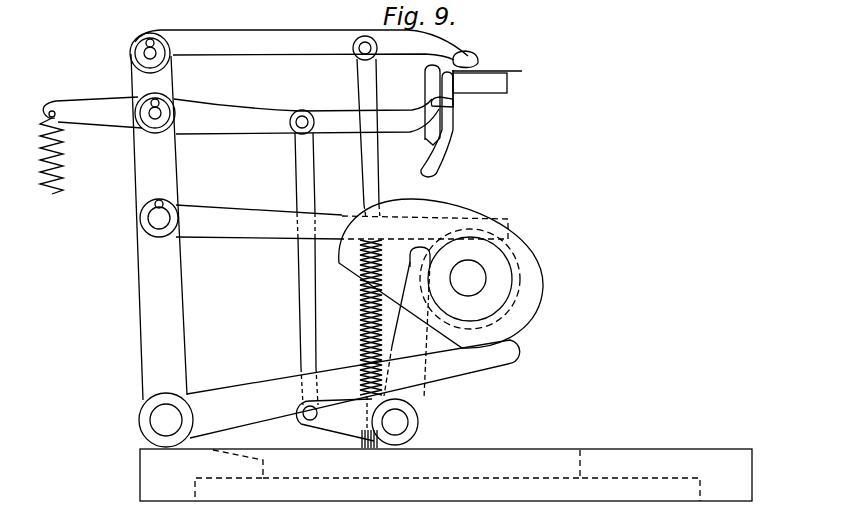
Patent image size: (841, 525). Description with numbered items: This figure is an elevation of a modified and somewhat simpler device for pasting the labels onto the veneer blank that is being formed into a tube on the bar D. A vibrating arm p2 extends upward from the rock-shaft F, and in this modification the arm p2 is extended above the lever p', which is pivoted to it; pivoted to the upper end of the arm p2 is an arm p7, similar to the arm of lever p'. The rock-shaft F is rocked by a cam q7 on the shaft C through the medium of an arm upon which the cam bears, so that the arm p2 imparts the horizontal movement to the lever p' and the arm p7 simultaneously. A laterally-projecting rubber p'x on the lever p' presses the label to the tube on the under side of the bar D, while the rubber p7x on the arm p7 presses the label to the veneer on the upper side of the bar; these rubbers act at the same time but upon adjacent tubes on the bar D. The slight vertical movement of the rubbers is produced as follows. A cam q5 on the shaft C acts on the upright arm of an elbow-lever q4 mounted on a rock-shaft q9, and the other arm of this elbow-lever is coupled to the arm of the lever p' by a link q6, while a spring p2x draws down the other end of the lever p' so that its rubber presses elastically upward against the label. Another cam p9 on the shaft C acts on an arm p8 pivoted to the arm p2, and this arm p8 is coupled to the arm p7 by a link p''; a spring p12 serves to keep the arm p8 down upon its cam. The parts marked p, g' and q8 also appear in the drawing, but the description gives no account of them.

The vibrating arm p2 is at (158, 216).
The rock-shaft F is at (166, 420).
The arm p7 is at (301, 45).
The laterally-projecting rubber p7x is at (481, 57).
The lever p' is at (306, 116).
The laterally-projecting rubber p'x is at (474, 111).
The vertical bar p is at (421, 105).
The curved arm g' is at (448, 124).
The bar D is at (508, 85).
The link p'' is at (378, 127).
The link q6 is at (308, 302).
The arm p8 is at (342, 222).
The spring p2x is at (91, 145).
The cam q7 is at (457, 212).
The shaft C is at (468, 278).
The cam q5 is at (517, 276).
The cam p9 is at (520, 298).
The elbow-lever q4 is at (407, 322).
The spring p12 is at (356, 317).
The rock-shaft q9 is at (397, 423).
The slanted bar q8 is at (485, 364).